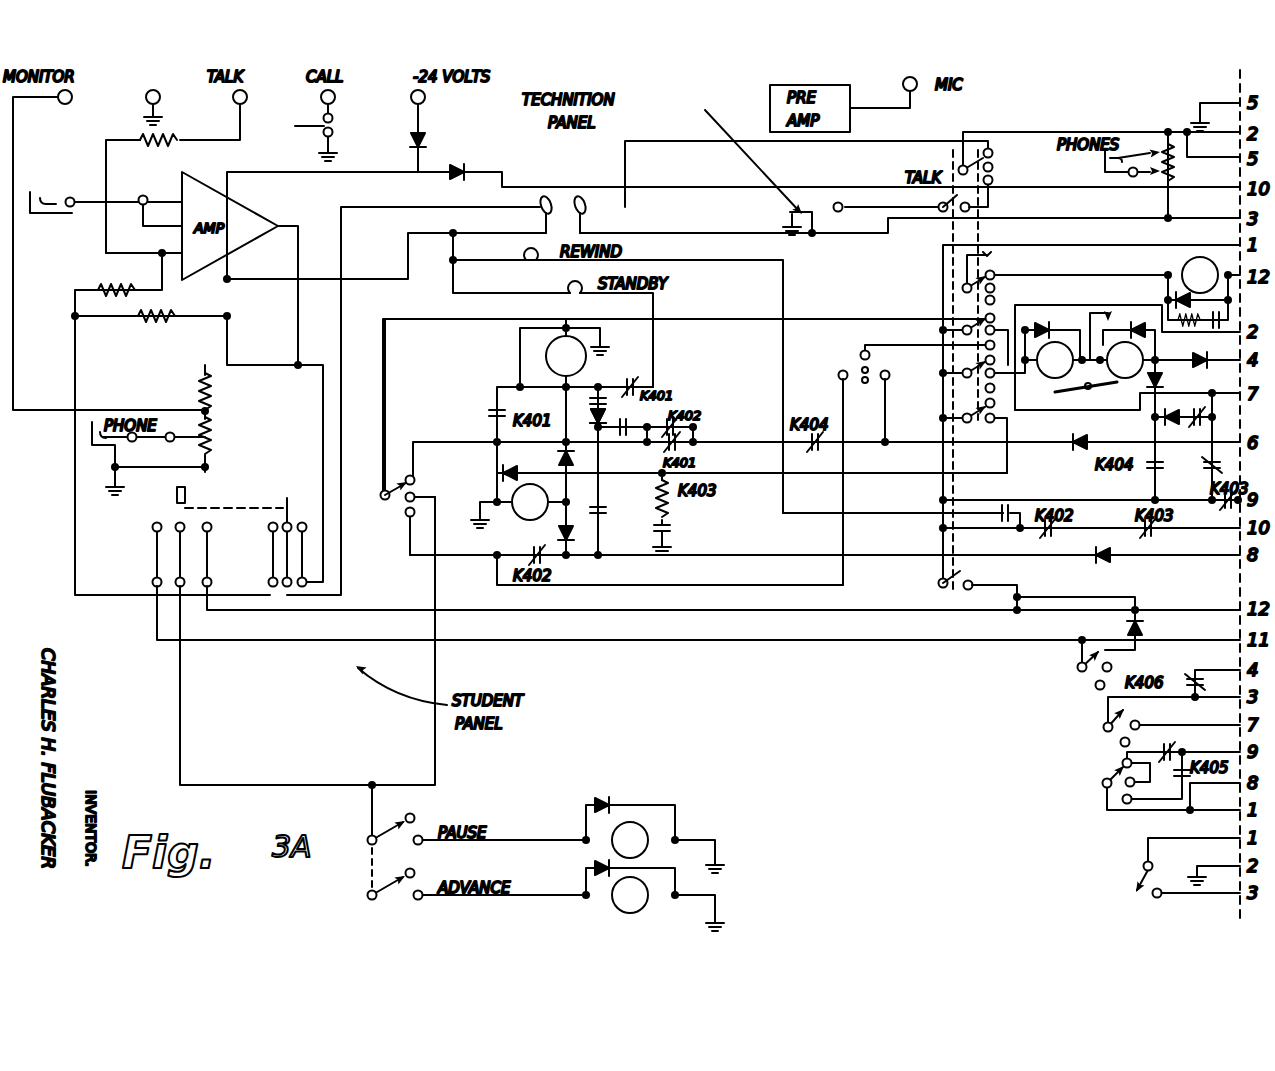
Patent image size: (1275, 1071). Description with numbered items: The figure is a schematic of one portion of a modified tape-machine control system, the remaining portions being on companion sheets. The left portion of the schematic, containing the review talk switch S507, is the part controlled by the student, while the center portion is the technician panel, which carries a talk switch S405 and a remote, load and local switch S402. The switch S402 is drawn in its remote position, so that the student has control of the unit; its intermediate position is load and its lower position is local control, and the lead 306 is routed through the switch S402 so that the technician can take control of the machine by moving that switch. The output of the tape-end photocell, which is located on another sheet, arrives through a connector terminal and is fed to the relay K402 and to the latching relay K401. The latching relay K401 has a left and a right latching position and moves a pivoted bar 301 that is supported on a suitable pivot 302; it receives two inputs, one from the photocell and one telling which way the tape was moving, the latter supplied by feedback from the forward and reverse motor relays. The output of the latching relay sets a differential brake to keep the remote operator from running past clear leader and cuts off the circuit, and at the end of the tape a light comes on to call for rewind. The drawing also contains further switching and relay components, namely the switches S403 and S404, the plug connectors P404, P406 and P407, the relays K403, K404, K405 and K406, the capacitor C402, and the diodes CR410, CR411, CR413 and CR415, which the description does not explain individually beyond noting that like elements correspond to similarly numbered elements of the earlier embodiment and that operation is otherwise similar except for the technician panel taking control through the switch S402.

The pivoted bar 301 is at (1057, 392).
The pivot 302 is at (1086, 399).
The lead 306 is at (886, 131).
The remote load and local switch S402 is at (999, 174).
The switch S403 is at (845, 467).
The mode switch S404 is at (1112, 729).
The talk switch S405 is at (902, 201).
The review talk switch S507 is at (194, 537).
The plug connector P404 is at (1186, 858).
The plug connector P406 is at (1213, 148).
The plug connector P407 is at (1210, 107).
The latching relay K401 is at (1075, 388).
The relay K402 is at (1172, 273).
The relay K403 is at (520, 508).
The relay contact K404 is at (618, 502).
The pause relay K405 is at (612, 848).
The advance relay K406 is at (640, 908).
The capacitor C402 is at (687, 521).
The diode CR410 is at (533, 457).
The diode CR411 is at (575, 533).
The diode CR413 is at (567, 425).
The diode CR415 is at (476, 478).